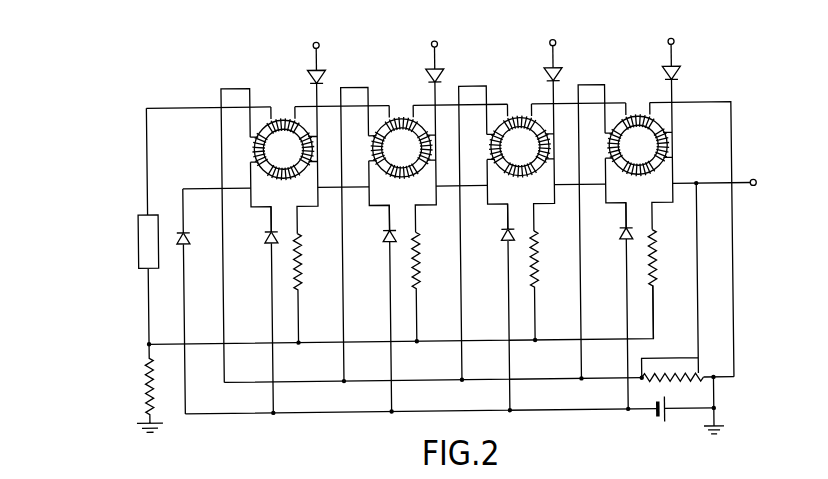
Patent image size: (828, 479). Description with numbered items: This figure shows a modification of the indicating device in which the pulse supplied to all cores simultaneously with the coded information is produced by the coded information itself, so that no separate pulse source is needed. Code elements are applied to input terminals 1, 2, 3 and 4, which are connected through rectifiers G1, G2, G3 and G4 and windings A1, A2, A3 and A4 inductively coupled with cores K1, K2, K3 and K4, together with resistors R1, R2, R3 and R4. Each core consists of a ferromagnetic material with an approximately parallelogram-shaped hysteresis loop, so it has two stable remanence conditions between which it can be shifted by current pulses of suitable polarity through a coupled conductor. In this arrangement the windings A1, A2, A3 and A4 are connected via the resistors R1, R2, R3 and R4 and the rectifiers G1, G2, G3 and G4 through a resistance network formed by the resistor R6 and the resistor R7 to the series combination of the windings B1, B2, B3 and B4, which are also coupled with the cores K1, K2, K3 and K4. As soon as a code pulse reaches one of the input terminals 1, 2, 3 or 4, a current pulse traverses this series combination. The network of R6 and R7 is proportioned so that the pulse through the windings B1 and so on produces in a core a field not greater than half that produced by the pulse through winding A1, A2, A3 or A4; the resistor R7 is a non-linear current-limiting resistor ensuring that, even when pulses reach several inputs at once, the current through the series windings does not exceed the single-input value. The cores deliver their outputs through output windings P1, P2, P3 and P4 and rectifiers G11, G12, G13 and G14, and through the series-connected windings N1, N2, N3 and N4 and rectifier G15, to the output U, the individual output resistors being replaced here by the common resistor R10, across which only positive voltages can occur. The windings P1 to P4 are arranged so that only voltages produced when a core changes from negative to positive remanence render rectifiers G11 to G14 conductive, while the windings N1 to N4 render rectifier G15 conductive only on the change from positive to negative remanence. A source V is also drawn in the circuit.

The input terminal 1 is at (316, 47).
The input terminal 2 is at (434, 46).
The input terminal 3 is at (553, 45).
The input terminal 4 is at (671, 43).
The rectifier G1 is at (325, 77).
The rectifier G2 is at (444, 76).
The rectifier G3 is at (562, 74).
The rectifier G4 is at (680, 73).
The rectifier G11 is at (264, 234).
The rectifier G12 is at (382, 234).
The rectifier G13 is at (501, 234).
The rectifier G14 is at (619, 234).
The rectifier G15 is at (197, 301).
The core K1 is at (283, 149).
The core K2 is at (401, 148).
The core K3 is at (520, 146).
The core K4 is at (638, 145).
The winding B1 is at (288, 113).
The winding B2 is at (406, 113).
The winding B3 is at (524, 113).
The winding B4 is at (643, 113).
The winding A1 is at (308, 146).
The winding A2 is at (426, 146).
The winding A3 is at (544, 146).
The winding A4 is at (662, 146).
The output winding P1 is at (254, 148).
The output winding P2 is at (372, 148).
The output winding P3 is at (490, 148).
The output winding P4 is at (608, 148).
The winding N1 is at (284, 180).
The winding N2 is at (402, 180).
The winding N3 is at (520, 180).
The winding N4 is at (638, 180).
The resistor R1 is at (302, 262).
The resistor R2 is at (420, 262).
The resistor R3 is at (538, 262).
The resistor R4 is at (656, 262).
The resistor R6 is at (142, 388).
The non-linear current-limiting resistor R7 is at (113, 252).
The common resistor R10 is at (683, 369).
The output U is at (752, 174).
The battery V is at (654, 417).